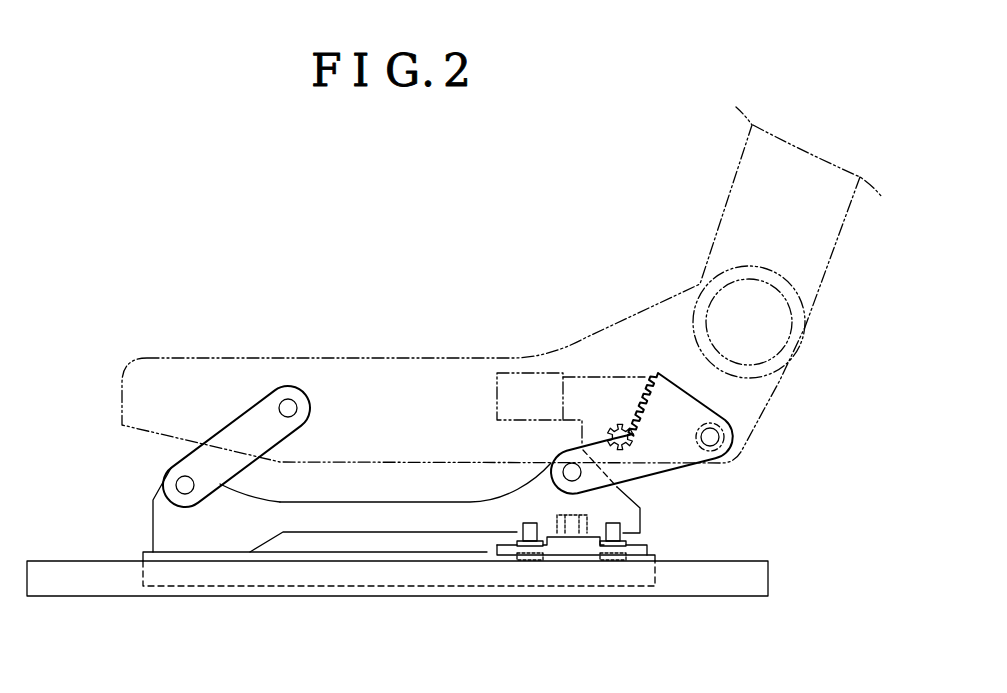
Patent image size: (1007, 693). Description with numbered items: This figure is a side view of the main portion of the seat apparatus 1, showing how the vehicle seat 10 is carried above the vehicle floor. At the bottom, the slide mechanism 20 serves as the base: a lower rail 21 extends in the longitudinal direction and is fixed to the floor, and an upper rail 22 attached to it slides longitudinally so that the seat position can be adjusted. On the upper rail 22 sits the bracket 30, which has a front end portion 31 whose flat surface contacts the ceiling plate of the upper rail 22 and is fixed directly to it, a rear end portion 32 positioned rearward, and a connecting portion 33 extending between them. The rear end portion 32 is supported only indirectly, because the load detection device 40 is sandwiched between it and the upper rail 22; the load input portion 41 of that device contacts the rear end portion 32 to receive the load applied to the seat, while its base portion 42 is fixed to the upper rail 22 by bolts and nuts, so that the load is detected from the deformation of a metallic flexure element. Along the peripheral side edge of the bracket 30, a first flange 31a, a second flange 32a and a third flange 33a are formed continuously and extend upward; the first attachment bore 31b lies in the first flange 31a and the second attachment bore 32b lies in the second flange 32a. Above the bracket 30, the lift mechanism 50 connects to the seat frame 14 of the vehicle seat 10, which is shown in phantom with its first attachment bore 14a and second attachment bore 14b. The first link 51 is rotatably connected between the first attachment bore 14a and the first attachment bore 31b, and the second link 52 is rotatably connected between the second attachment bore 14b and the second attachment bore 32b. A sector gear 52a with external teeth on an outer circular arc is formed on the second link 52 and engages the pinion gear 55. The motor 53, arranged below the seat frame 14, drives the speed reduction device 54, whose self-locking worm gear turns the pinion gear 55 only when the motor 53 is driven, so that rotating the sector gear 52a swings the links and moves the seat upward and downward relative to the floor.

The seat apparatus 1 is at (266, 153).
The vehicle seat 10 is at (287, 200).
The seat frame 14 is at (434, 358).
The first attachment bore 14a is at (288, 388).
The second attachment bore 14b is at (724, 432).
The slide mechanism 20 is at (61, 542).
The lower rail 21 is at (105, 597).
The upper rail 22 is at (143, 558).
The bracket 30 is at (414, 569).
The front end portion 31 is at (183, 537).
The first flange 31a is at (227, 500).
The first attachment bore 31b is at (177, 485).
The rear end portion 32 is at (641, 512).
The second flange 32a is at (625, 492).
The second attachment bore 32b is at (563, 478).
The connecting portion 33 is at (434, 522).
The third flange 33a is at (392, 507).
The load detection device 40 is at (611, 594).
The load input portion 41 is at (637, 540).
The base portion 42 is at (565, 556).
The lift mechanism 50 is at (717, 380).
The first link 51 is at (232, 428).
The second link 52 is at (728, 450).
The sector gear 52a is at (643, 392).
The motor 53 is at (537, 373).
The speed reduction device 54 is at (607, 377).
The pinion gear 55 is at (637, 436).